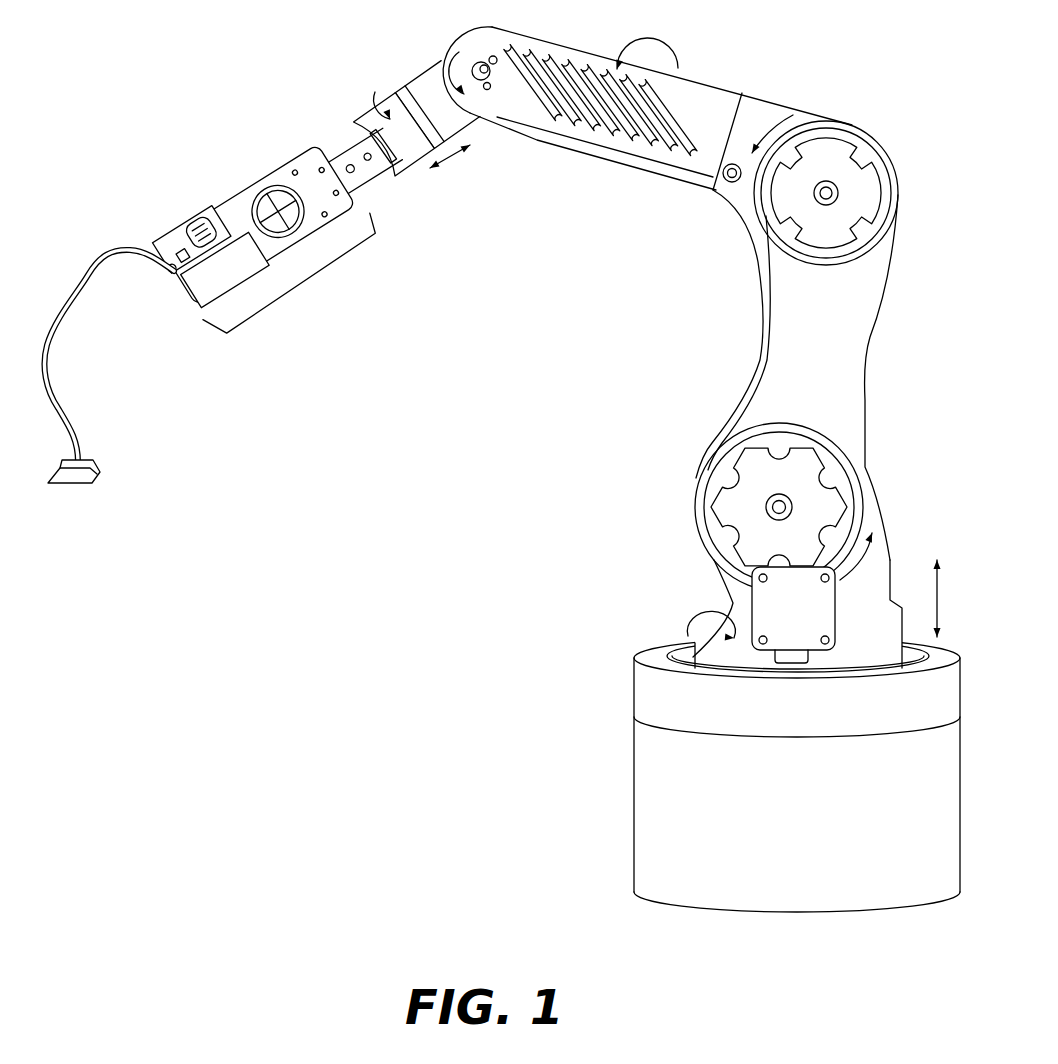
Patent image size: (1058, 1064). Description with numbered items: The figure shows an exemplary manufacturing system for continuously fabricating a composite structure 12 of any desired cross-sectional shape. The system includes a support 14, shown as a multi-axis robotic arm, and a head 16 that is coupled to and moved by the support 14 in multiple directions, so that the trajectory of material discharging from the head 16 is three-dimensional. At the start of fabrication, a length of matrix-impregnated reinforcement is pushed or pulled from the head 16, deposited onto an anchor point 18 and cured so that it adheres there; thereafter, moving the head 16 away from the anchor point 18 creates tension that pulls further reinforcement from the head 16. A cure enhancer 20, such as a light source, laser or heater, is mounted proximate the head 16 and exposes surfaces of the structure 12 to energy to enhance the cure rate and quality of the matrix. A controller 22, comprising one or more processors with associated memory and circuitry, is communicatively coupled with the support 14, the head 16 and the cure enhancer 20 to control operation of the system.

The composite structure 12 is at (83, 443).
The support 14 is at (657, 469).
The head 16 is at (255, 196).
The anchor point 18 is at (70, 484).
The cure enhancer 20 is at (156, 258).
The controller 22 is at (803, 625).